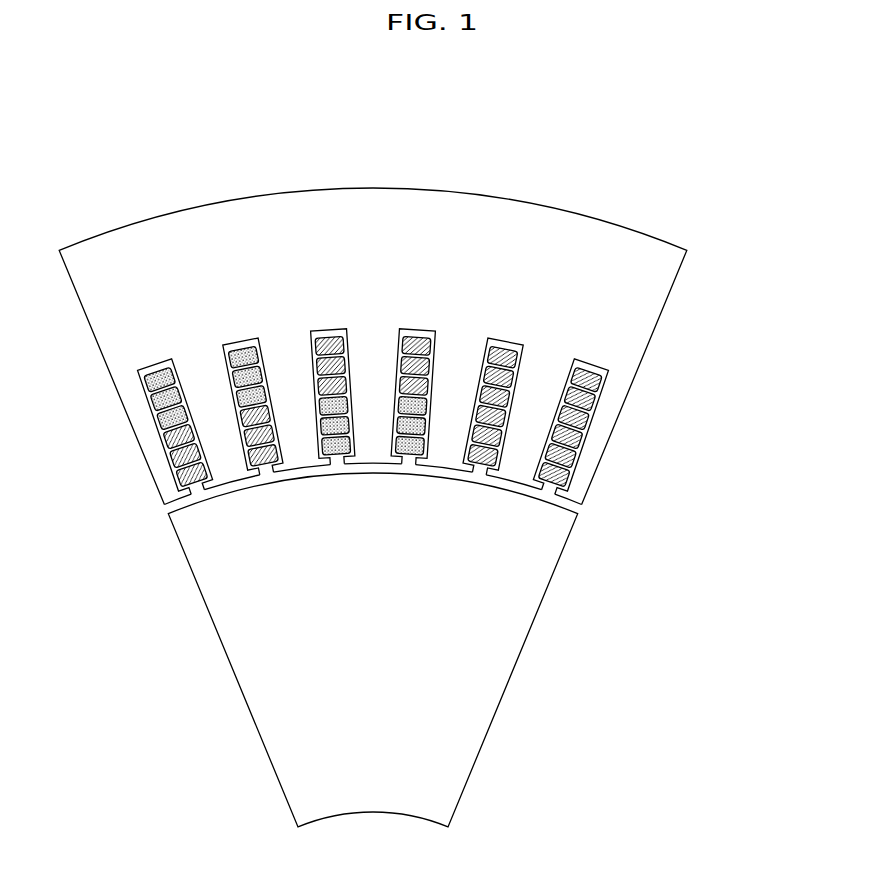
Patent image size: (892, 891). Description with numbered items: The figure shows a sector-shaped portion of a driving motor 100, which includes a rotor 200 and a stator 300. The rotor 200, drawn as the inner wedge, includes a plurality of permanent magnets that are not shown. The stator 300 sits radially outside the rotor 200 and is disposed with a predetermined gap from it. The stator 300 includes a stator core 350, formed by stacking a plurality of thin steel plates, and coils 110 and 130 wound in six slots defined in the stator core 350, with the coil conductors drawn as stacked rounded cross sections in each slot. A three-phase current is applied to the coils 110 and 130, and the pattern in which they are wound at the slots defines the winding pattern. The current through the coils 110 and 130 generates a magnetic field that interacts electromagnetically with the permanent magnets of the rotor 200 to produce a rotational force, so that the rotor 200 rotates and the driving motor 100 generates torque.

The driving motor 100 is at (742, 149).
The rotor 200 is at (541, 681).
The stator 300 is at (659, 406).
The stator core 350 is at (625, 317).
The coil 110 is at (578, 438).
The coil 130 is at (373, 412).